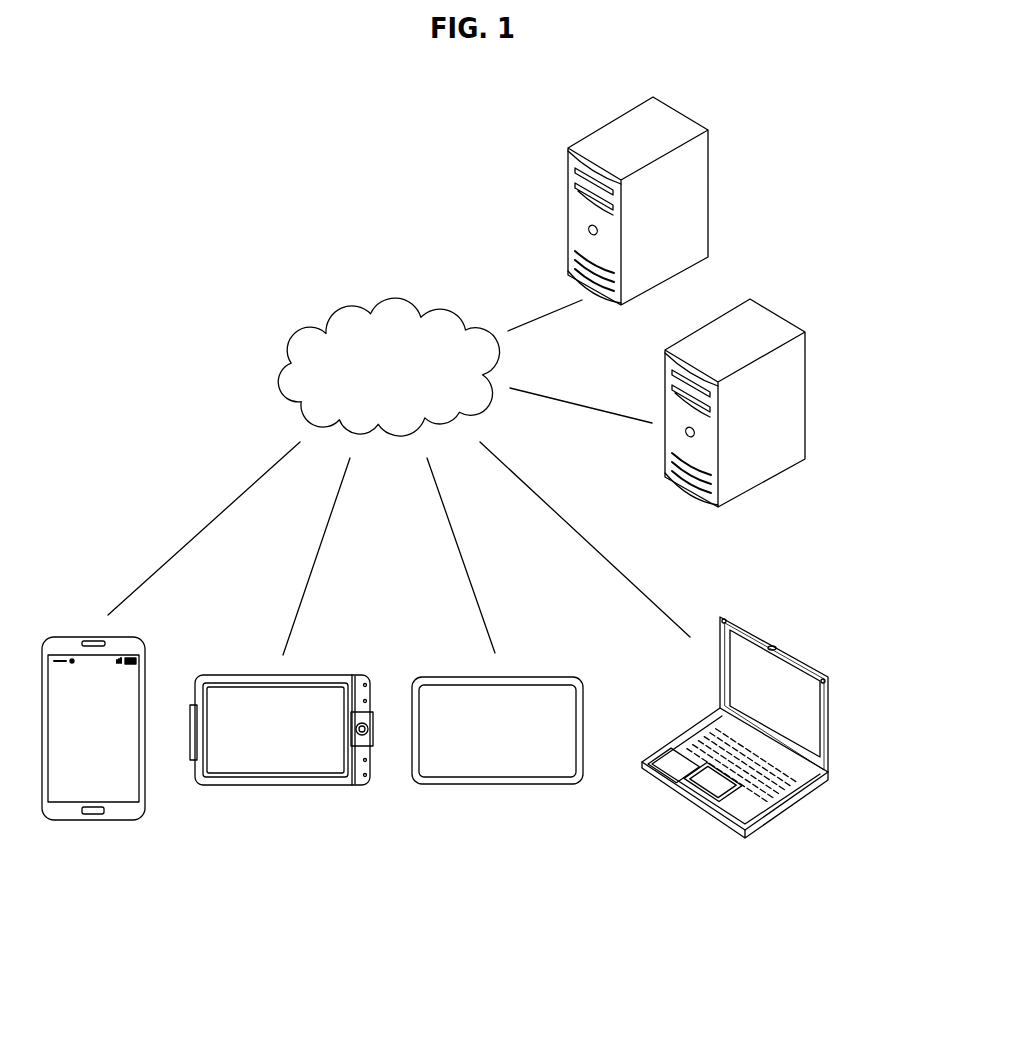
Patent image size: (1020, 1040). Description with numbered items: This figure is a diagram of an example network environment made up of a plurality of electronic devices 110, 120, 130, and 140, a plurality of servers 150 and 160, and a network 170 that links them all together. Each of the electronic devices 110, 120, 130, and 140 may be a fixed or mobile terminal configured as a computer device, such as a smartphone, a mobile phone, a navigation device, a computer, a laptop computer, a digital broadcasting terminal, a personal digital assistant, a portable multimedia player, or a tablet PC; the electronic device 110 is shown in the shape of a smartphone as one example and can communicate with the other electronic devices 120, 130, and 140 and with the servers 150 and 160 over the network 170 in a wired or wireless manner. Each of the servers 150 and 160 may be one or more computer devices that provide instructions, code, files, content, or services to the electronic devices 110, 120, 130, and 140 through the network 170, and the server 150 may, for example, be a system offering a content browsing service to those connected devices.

The electronic device 110 is at (96, 822).
The electronic device 120 is at (283, 786).
The electronic device 130 is at (497, 786).
The electronic device 140 is at (830, 728).
The server 150 is at (805, 392).
The server 160 is at (708, 190).
The network 170 is at (396, 300).